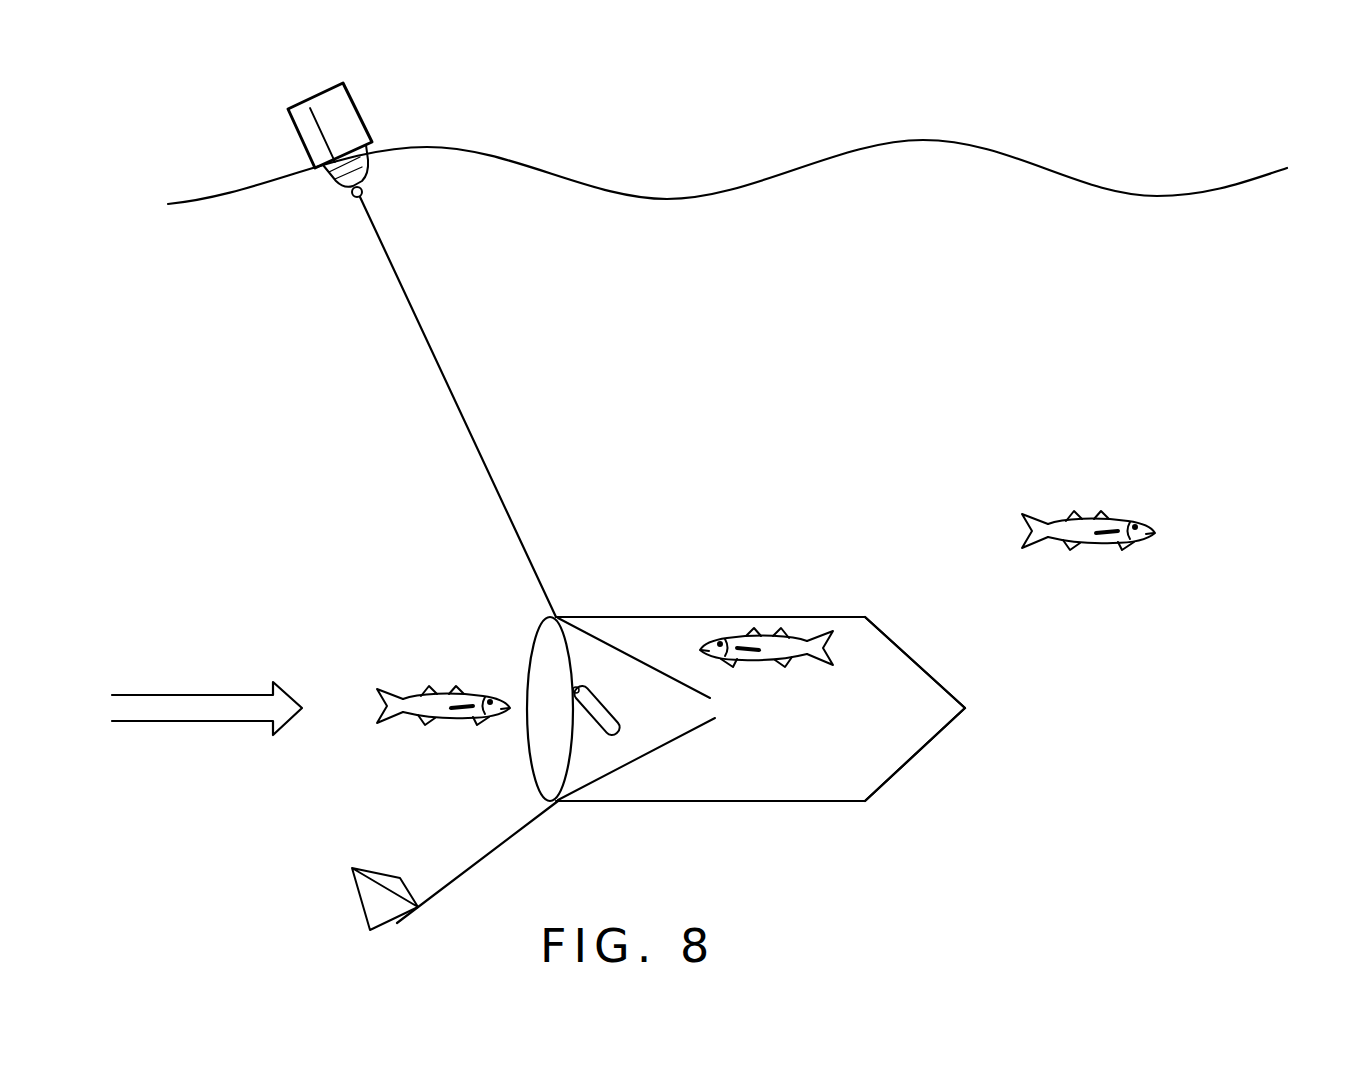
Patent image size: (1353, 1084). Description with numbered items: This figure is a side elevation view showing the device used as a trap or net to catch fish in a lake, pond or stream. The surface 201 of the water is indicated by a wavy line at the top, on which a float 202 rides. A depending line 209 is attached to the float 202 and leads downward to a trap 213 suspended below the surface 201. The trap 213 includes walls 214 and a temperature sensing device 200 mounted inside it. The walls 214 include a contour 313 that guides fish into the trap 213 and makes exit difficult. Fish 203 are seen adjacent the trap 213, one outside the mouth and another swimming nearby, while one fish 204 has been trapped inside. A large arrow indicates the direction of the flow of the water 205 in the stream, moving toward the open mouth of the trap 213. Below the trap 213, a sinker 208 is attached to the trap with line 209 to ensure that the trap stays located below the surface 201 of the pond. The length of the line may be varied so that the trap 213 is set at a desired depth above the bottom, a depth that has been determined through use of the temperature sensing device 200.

The temperature sensing device 200 is at (626, 724).
The surface 201 is at (552, 172).
The float 202 is at (356, 102).
The fish 203 is at (428, 713).
The fish 204 is at (785, 637).
The direction of the flow of the water 205 is at (150, 695).
The sinker 208 is at (364, 903).
The line 209 is at (481, 441).
The trap 213 is at (783, 808).
The walls 214 is at (920, 665).
The contour 313 is at (640, 660).